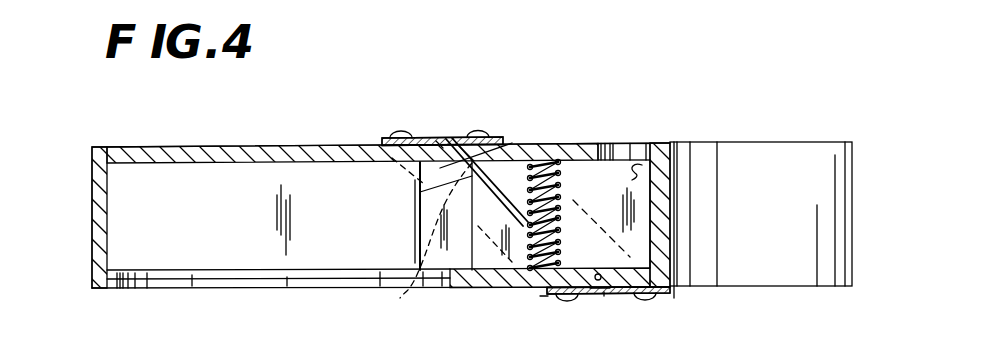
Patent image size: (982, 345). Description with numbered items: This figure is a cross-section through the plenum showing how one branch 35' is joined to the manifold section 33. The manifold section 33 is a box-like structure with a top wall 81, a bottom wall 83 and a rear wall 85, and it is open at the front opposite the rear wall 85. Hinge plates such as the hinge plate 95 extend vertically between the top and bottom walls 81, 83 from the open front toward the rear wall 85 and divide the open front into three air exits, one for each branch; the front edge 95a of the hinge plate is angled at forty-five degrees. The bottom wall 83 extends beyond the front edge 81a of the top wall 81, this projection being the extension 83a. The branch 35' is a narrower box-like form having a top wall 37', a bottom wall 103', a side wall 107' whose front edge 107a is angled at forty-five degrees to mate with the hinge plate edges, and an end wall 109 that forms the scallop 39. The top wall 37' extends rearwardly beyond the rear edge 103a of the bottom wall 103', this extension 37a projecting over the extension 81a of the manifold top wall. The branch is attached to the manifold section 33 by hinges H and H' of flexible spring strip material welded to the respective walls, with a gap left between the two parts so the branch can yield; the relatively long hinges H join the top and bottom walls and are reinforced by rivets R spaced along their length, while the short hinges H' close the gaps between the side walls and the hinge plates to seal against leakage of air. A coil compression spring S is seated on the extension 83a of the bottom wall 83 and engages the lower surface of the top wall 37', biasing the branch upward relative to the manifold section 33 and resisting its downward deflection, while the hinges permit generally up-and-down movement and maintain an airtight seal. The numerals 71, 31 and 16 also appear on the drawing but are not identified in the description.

The manifold section 33 is at (90, 177).
The rear wall 85 is at (90, 233).
The top wall 81 is at (182, 147).
The front edge of top wall 81a is at (447, 140).
The bottom wall slot 71 is at (150, 288).
The bottom wall 83 is at (482, 292).
The extension of bottom wall 83a is at (570, 283).
The hinge plate 95 is at (136, 231).
The front edge of hinge plate 95a is at (558, 268).
The front edge of side wall 107a is at (445, 196).
The side wall 107' is at (645, 177).
The bottom wall 103' is at (641, 316).
The rear edge of bottom wall 103a is at (595, 291).
The extension of top wall 37a is at (537, 142).
The top wall 37' is at (520, 174).
The connector 31 is at (613, 141).
The end wall 109 is at (674, 200).
The branch 35' is at (773, 176).
The scallop 39 is at (800, 260).
The base 16 is at (544, 300).
The coil compression spring S is at (565, 188).
The rivet R is at (400, 134).
The hinge H is at (536, 194).
The hinge H' is at (412, 244).